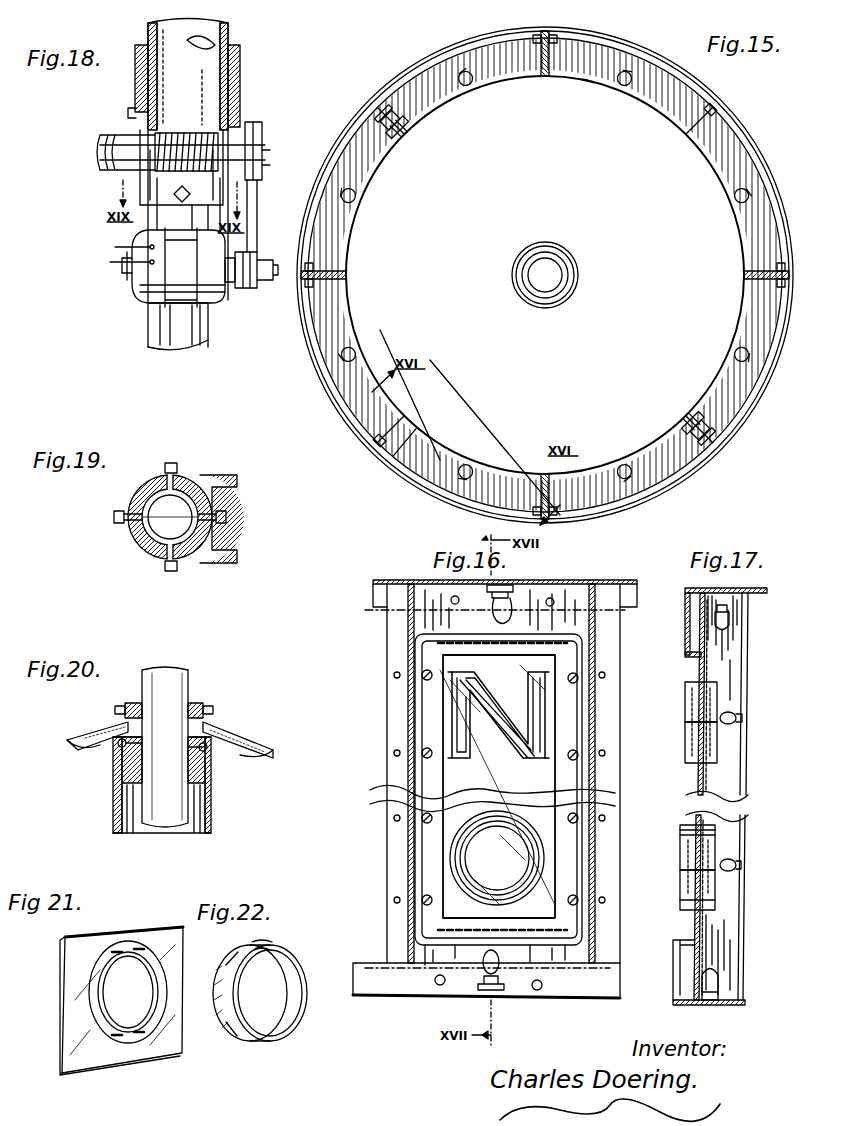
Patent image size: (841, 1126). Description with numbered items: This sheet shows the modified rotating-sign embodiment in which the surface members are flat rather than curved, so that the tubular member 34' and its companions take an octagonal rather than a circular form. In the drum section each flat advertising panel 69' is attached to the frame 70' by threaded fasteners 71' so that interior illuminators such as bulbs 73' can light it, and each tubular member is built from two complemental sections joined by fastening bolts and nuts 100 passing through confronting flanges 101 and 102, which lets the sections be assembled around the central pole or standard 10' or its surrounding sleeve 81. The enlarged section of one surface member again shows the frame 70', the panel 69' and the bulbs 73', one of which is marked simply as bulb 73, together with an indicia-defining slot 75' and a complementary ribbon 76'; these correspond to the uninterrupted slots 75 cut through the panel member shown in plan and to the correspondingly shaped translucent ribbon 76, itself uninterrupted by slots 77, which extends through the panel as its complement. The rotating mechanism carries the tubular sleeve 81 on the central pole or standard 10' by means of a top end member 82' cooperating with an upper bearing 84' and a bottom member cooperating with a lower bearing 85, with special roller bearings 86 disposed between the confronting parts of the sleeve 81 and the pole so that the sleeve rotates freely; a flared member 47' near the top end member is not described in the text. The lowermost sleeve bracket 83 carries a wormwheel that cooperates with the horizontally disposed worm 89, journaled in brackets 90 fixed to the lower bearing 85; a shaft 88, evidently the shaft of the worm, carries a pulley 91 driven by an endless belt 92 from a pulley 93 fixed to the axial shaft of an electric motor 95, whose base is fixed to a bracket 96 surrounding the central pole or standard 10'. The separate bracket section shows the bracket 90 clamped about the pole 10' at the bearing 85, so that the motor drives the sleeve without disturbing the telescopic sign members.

In FIG. 18, the central pole or standard 10' is at (223, 184).
In FIG. 15, the central pole or standard 10' is at (545, 294).
In FIG. 19, the central pole or standard 10' is at (133, 509).
In FIG. 20, the central pole or standard 10' is at (135, 747).
In FIG. 15, the tubular member 34' is at (545, 275).
In FIG. 20, the conical plate 47' is at (182, 728).
In FIG. 15, the panel 69' is at (545, 291).
In FIG. 16, the panel 69' is at (492, 789).
In FIG. 17, the panel 69' is at (742, 797).
In FIG. 21, the panel 69' is at (146, 1003).
In FIG. 15, the frame 70' is at (470, 422).
In FIG. 16, the frame 70' is at (487, 789).
In FIG. 17, the frame 70' is at (702, 796).
In FIG. 15, the threaded fasteners 71' is at (427, 427).
In FIG. 17, the bulb 73 is at (747, 617).
In FIG. 15, the bulbs 73' is at (544, 274).
In FIG. 16, the bulbs 73' is at (484, 784).
In FIG. 17, the bulbs 73' is at (738, 856).
In FIG. 21, the slots 75 is at (150, 991).
In FIG. 16, the slots 75' is at (542, 786).
In FIG. 22, the translucent ribbon 76 is at (277, 985).
In FIG. 16, the translucent ribbon 76' is at (495, 785).
In FIG. 17, the translucent ribbon 76' is at (731, 795).
In FIG. 22, the slots 77 is at (262, 942).
In FIG. 18, the tubular sleeve 81 is at (232, 32).
In FIG. 15, the tubular sleeve 81 is at (520, 298).
In FIG. 20, the tubular sleeve 81 is at (212, 826).
In FIG. 20, the top end member 82' is at (197, 785).
In FIG. 18, the lowermost sleeve bracket 83 is at (136, 112).
In FIG. 20, the bearing 84' is at (175, 678).
In FIG. 18, the bearing 85 is at (165, 200).
In FIG. 19, the bearing 85 is at (152, 478).
In FIG. 20, the roller bearings 86 is at (210, 738).
In FIG. 18, the shaft 88 is at (100, 155).
In FIG. 18, the worm 89 is at (152, 142).
In FIG. 18, the brackets 90 is at (140, 182).
In FIG. 19, the brackets 90 is at (232, 476).
In FIG. 18, the pulley 91 is at (264, 138).
In FIG. 18, the endless belt 92 is at (258, 224).
In FIG. 18, the pulley 93 is at (258, 290).
In FIG. 18, the electric motor 95 is at (218, 303).
In FIG. 18, the bracket 96 is at (150, 303).
In FIG. 15, the fastening bolts and nuts 100 is at (400, 100).
In FIG. 15, the flange 101 is at (420, 115).
In FIG. 15, the flange 102 is at (395, 130).